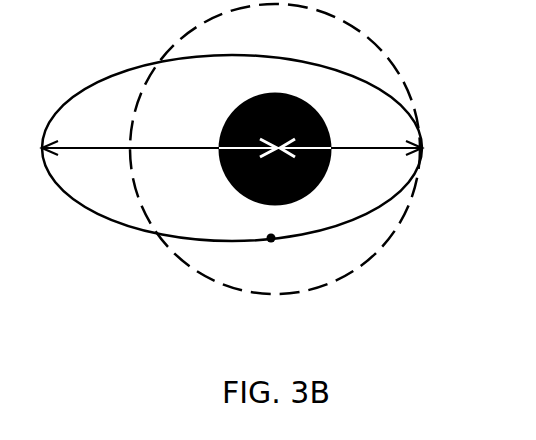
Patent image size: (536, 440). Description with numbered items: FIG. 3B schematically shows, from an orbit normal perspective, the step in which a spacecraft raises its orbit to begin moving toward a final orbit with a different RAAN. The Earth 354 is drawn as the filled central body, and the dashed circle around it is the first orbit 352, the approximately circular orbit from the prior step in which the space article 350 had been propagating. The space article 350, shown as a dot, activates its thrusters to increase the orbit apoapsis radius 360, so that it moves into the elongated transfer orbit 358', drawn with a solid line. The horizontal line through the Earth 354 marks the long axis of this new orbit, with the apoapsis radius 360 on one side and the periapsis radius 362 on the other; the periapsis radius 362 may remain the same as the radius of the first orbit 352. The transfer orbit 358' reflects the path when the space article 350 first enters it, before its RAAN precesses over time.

The space article 350 is at (271, 242).
The first orbit 352 is at (205, 276).
The Earth 354 is at (250, 93).
The transfer orbit 358' is at (232, 171).
The orbit apoapsis radius 360 is at (203, 147).
The periapsis radius 362 is at (358, 147).